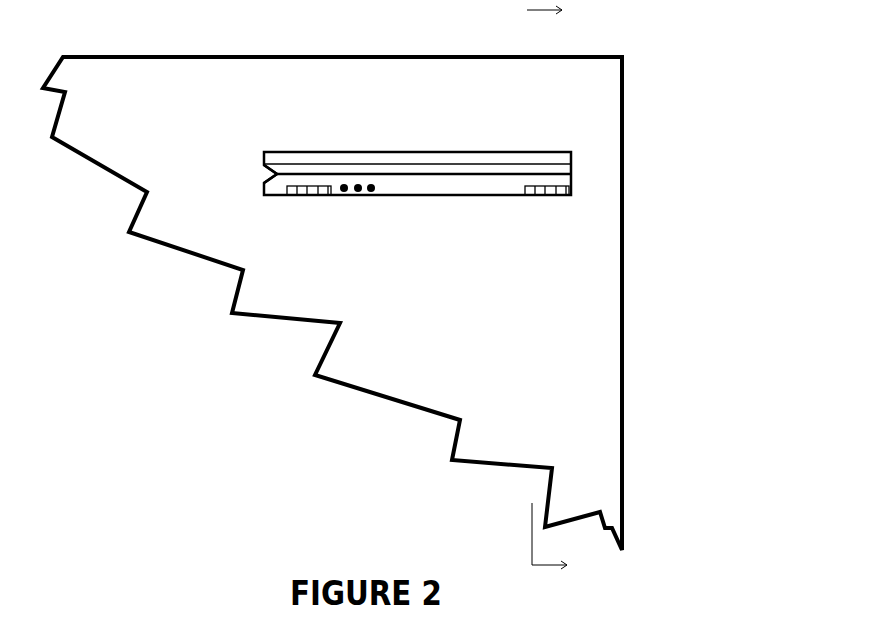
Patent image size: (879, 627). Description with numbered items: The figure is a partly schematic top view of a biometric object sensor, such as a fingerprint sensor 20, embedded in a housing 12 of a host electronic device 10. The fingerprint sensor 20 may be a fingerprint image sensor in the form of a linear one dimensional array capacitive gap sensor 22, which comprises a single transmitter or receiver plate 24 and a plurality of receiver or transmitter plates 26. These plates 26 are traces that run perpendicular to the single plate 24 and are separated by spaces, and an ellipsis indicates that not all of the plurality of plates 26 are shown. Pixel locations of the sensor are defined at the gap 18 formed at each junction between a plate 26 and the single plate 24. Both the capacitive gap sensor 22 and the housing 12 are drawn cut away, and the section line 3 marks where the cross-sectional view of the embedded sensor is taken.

The host electronic device 10 is at (650, 260).
The housing 12 is at (623, 365).
The gap 18 is at (262, 175).
The fingerprint sensor 20 is at (497, 138).
The linear one dimensional array capacitive gap sensor 22 is at (338, 162).
The transmitter or receiver plate 24 is at (546, 166).
The receiver or transmitter plates 26 is at (313, 202).
The line 3- 3 is at (556, 289).